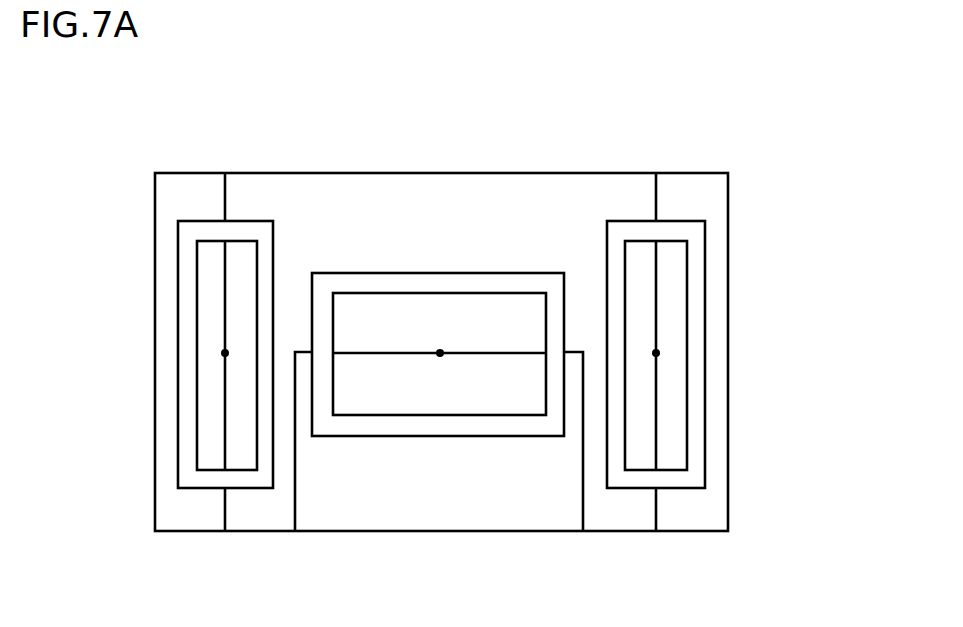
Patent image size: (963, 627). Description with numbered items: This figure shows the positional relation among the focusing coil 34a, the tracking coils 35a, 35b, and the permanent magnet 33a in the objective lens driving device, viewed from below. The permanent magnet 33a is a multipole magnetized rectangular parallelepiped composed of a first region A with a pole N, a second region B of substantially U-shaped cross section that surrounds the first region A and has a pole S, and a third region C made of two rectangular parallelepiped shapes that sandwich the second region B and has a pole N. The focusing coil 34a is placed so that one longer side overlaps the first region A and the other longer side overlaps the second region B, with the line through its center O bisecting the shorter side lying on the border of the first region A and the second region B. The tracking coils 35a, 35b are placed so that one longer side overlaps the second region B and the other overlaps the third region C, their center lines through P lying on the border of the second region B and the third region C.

The permanent magnet 33a is at (472, 175).
The focusing coil 34a is at (402, 272).
The tracking coil 35a is at (178, 402).
The tracking coil 35b is at (706, 372).
The first region A is at (451, 520).
The second region B is at (560, 200).
The third region C is at (170, 222).